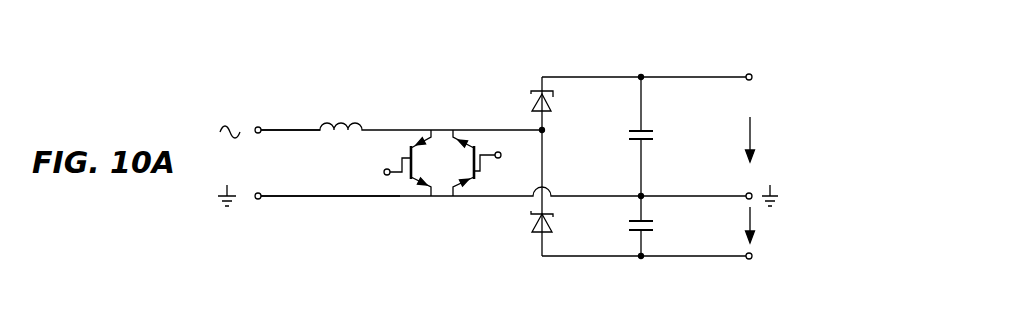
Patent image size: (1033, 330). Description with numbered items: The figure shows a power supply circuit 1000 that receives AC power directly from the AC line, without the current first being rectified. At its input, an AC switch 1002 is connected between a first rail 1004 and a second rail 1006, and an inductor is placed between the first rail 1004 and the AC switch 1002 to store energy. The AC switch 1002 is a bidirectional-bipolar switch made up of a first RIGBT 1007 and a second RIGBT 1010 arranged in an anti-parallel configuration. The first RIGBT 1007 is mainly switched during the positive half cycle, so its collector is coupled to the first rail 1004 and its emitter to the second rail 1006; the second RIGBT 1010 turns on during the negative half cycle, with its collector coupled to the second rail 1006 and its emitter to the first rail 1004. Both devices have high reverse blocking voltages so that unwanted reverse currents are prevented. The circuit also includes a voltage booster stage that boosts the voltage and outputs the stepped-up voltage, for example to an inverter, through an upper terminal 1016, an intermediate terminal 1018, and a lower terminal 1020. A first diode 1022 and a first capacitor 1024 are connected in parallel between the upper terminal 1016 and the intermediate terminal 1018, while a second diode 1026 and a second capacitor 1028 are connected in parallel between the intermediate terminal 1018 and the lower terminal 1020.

The power supply circuit 1000 is at (478, 55).
The AC switch 1002 is at (412, 190).
The first rail 1004 is at (269, 131).
The second rail 1006 is at (357, 197).
The first RIGBT 1007 is at (380, 161).
The second RIGBT 1010 is at (504, 166).
The upper terminal 1016 is at (751, 74).
The intermediate terminal 1018 is at (751, 193).
The lower terminal 1020 is at (751, 259).
The first diode 1022 is at (553, 102).
The first capacitor 1024 is at (653, 128).
The second diode 1026 is at (553, 222).
The second capacitor 1028 is at (651, 221).